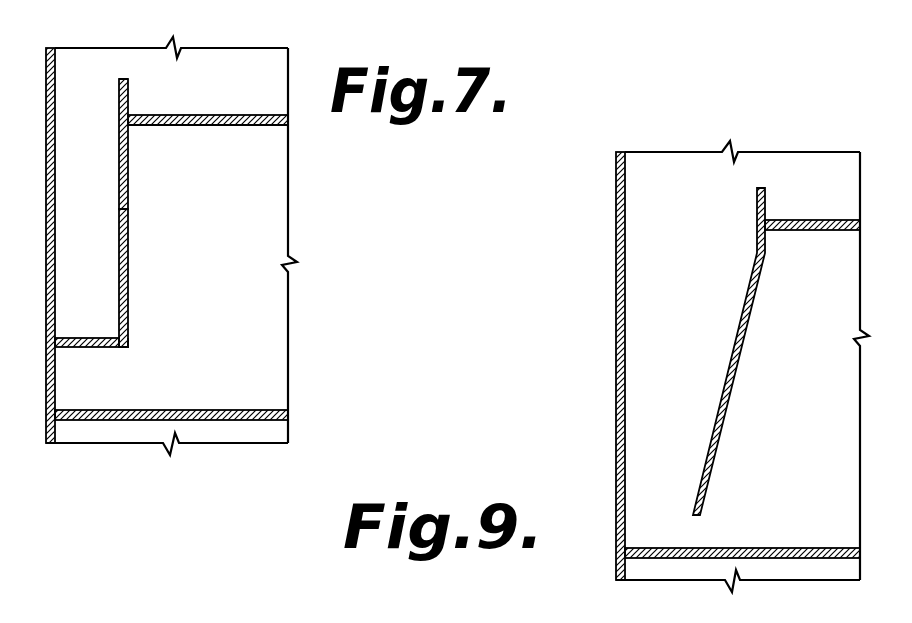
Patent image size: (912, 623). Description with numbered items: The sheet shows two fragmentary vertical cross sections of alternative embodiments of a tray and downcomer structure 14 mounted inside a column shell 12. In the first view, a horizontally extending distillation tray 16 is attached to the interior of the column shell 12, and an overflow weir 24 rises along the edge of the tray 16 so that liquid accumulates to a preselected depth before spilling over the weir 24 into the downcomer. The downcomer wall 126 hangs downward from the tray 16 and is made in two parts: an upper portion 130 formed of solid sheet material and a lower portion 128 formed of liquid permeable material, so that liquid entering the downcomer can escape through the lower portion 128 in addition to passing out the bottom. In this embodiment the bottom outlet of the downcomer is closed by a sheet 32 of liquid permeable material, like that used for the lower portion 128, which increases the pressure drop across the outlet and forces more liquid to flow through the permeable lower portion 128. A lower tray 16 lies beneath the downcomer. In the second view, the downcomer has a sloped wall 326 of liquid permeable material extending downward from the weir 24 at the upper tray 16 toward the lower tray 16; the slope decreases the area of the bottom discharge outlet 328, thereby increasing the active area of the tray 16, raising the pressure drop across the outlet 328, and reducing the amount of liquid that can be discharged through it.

In FIG. 7, the column shell 12 is at (46, 274).
In FIG. 9, the column shell 12 is at (616, 316).
In FIG. 7, the tray and downcomer structure 14 is at (238, 128).
In FIG. 7, the distillation tray 16 is at (245, 115).
In FIG. 9, the distillation tray 16 is at (835, 230).
In FIG. 7, the overflow weir 24 is at (128, 92).
In FIG. 9, the overflow weir 24 is at (765, 193).
In FIG. 7, the sheet of liquid permeable material 32 is at (100, 350).
In FIG. 7, the downcomer wall 126 is at (128, 256).
In FIG. 7, the lower portion of downcomer wall 128 is at (117, 356).
In FIG. 7, the upper portion of downcomer wall 130 is at (128, 152).
In FIG. 9, the sloped wall 326 is at (735, 371).
In FIG. 9, the bottom discharge outlet 328 is at (670, 518).